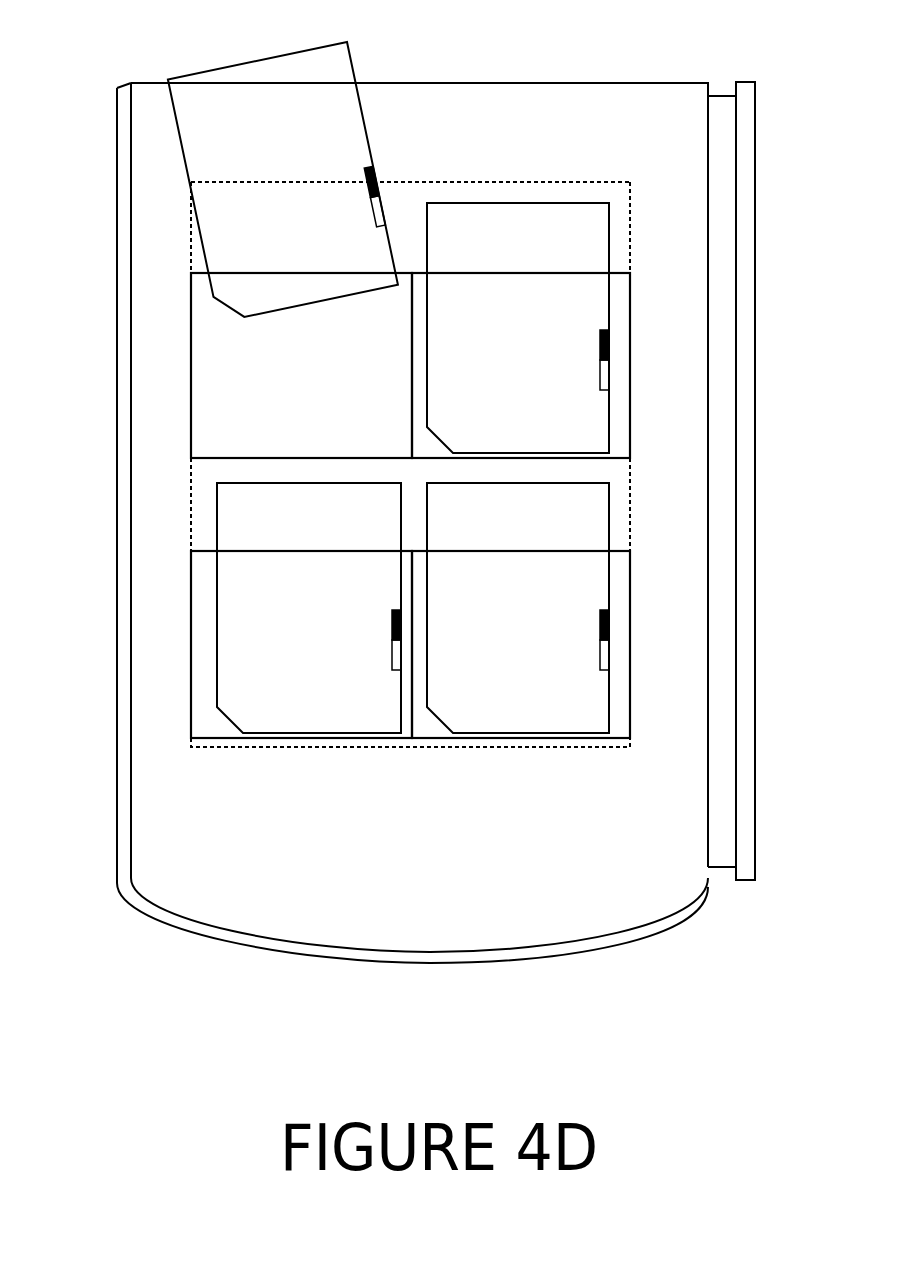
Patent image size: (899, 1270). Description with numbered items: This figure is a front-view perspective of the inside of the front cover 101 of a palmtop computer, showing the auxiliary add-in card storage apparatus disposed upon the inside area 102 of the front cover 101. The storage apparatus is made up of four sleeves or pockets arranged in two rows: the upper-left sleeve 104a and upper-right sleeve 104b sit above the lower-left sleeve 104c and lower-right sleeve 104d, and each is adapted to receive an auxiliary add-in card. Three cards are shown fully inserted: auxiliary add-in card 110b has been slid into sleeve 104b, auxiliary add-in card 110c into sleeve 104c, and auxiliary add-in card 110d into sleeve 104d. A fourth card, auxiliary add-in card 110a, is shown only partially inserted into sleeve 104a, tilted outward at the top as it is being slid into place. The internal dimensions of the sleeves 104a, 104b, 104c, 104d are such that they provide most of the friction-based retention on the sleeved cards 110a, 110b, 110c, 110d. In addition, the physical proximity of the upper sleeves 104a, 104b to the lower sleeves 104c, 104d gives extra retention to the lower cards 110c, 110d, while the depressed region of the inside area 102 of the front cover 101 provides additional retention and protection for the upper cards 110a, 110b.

The front cover 101 is at (117, 232).
The inside area 102 is at (630, 107).
The auxiliary add-in card storage sleeve 104a is at (190, 365).
The auxiliary add-in card storage sleeve 104b is at (630, 365).
The auxiliary add-in card storage sleeve 104c is at (190, 645).
The auxiliary add-in card storage sleeve 104d is at (630, 660).
The auxiliary add-in card 110a is at (243, 62).
The auxiliary add-in card 110b is at (609, 235).
The auxiliary add-in card 110c is at (217, 512).
The auxiliary add-in card 110d is at (609, 513).